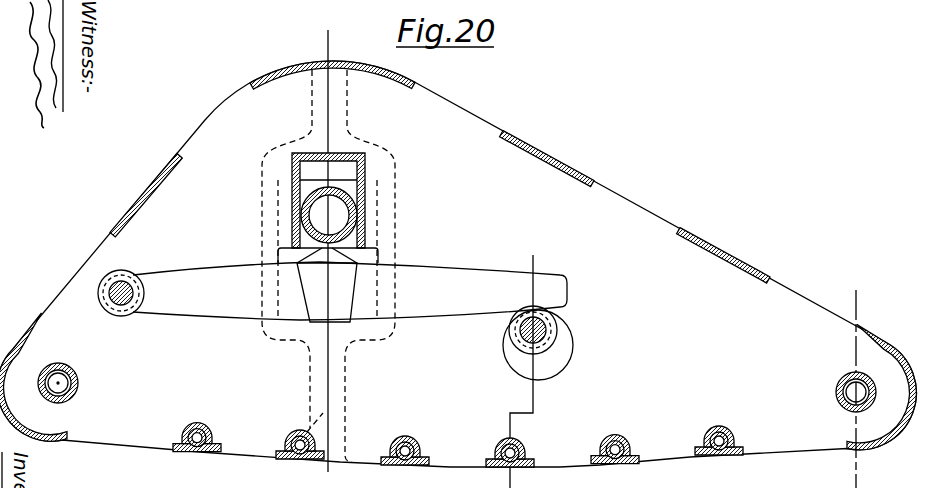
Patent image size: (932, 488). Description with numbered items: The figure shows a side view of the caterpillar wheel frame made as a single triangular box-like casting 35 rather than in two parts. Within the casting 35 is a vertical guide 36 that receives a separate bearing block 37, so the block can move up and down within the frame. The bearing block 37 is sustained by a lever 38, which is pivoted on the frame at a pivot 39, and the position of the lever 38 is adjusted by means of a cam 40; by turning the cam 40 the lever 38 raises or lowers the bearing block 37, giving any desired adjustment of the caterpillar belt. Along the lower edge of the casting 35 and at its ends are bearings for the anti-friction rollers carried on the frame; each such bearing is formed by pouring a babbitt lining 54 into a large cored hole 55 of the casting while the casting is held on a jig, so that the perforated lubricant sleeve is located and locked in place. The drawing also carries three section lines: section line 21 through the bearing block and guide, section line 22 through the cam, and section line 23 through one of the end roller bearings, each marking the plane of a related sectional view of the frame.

The section line 21 is at (353, 28).
The section line 22 is at (548, 260).
The section line 23 is at (870, 297).
The triangular box-like casting 35 is at (458, 264).
The vertical guide 36 is at (304, 171).
The bearing block 37 is at (307, 188).
The lever 38 is at (241, 281).
The pivot 39 is at (112, 312).
The cam 40 is at (563, 360).
The babbitt lining 54 is at (706, 432).
The cored hole 55 is at (290, 438).